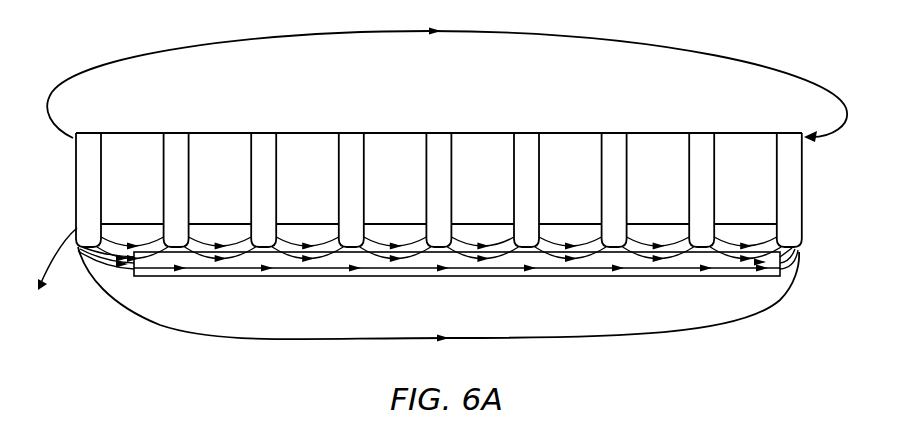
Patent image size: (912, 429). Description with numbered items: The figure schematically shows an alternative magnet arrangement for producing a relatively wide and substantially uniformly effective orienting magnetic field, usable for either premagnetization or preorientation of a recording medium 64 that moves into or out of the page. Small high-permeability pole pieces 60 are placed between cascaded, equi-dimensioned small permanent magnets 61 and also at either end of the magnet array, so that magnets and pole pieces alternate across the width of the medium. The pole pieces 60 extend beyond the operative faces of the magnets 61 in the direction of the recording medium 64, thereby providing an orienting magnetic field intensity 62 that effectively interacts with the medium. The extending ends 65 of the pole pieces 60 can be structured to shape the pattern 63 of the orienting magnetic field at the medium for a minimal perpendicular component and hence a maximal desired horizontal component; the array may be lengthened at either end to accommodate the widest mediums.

The pole pieces 60 is at (615, 141).
The permanent magnets 61 is at (202, 137).
The orienting magnetic field intensity 62 is at (127, 263).
The pattern of the orienting magnetic field 63 is at (209, 258).
The recording medium 64 is at (138, 277).
The extending ends 65 is at (88, 231).